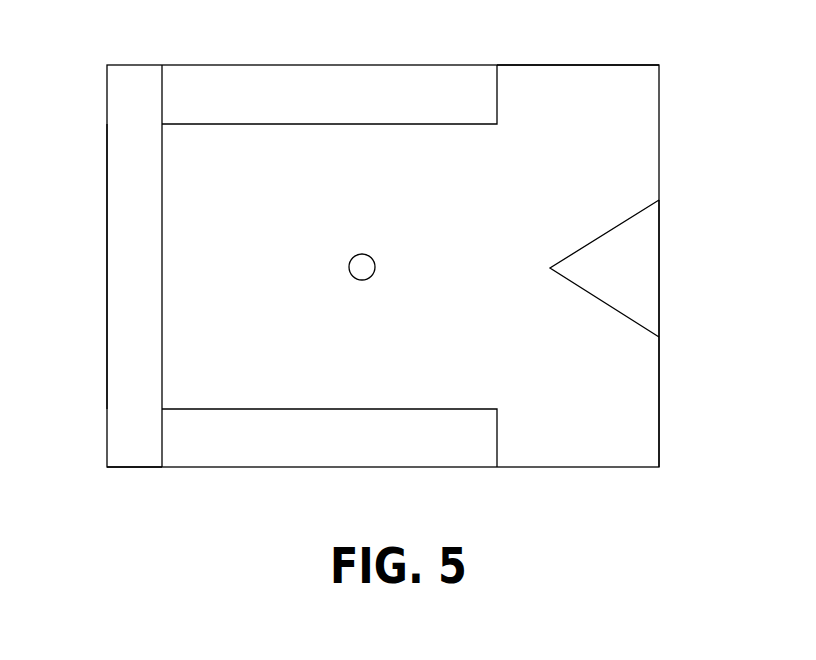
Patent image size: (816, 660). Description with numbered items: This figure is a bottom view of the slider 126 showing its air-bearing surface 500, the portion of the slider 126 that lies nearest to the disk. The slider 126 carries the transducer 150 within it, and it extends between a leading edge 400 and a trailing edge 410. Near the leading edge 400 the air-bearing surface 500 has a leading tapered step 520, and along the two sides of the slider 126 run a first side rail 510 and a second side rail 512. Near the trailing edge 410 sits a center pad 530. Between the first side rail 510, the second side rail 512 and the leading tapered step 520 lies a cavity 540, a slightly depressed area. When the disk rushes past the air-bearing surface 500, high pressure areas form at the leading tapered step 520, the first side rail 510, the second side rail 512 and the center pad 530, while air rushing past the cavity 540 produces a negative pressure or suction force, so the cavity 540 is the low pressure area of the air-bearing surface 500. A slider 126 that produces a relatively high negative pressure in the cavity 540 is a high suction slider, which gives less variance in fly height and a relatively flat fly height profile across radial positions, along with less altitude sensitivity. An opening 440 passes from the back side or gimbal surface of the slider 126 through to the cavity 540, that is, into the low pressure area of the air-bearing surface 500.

The air-bearing surface 500 is at (647, 126).
The first side rail 510 is at (282, 75).
The second side rail 512 is at (273, 458).
The leading tapered step 520 is at (113, 130).
The center pad 530 is at (642, 303).
The cavity 540 is at (192, 375).
The opening 440 is at (372, 252).
The slider 126 is at (586, 67).
The transducer 150 is at (659, 268).
The trailing edge 410 is at (659, 424).
The leading edge 400 is at (105, 347).